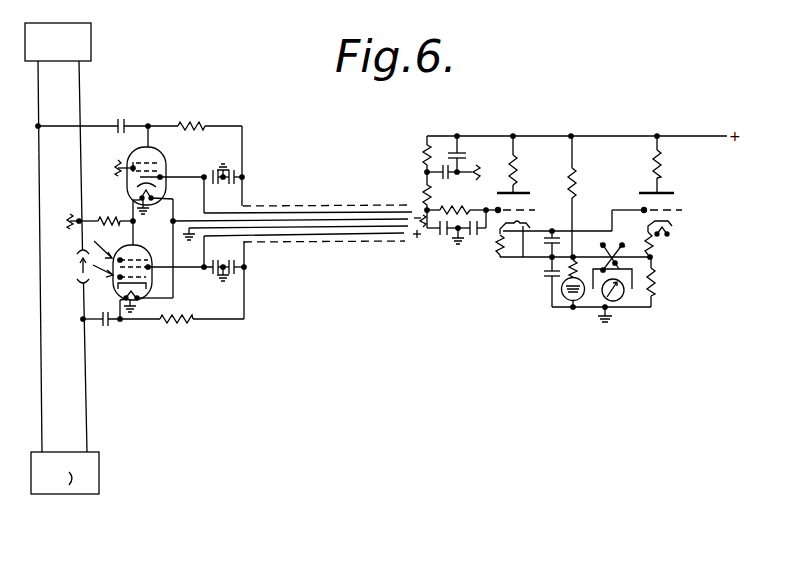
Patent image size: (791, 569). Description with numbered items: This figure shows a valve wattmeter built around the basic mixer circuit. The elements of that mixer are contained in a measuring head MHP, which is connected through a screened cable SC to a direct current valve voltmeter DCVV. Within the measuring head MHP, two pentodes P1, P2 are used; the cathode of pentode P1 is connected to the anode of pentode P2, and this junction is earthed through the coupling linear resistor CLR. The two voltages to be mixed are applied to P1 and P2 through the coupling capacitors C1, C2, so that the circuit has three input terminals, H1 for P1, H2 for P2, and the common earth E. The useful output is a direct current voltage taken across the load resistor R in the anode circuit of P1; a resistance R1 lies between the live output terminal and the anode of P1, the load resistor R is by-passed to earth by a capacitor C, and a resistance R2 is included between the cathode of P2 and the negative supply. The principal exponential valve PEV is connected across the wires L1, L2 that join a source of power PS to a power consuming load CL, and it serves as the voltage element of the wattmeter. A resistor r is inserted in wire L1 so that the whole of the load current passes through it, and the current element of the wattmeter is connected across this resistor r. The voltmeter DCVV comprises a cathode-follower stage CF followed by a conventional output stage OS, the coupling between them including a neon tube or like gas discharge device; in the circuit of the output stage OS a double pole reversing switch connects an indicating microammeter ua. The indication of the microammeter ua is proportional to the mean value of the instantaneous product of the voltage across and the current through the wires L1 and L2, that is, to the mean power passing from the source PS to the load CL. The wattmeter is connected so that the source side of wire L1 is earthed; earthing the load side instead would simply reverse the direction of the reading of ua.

The source of power PS is at (74, 40).
The wire L1 is at (94, 256).
The wire L2 is at (51, 256).
The power consuming load CL is at (69, 490).
The input terminal H1 is at (129, 129).
The input terminal H2 is at (152, 323).
The coupling capacitor C1 is at (124, 117).
The coupling capacitor C2 is at (106, 332).
The resistance R1 is at (194, 115).
The resistance R2 is at (176, 333).
The principal exponential valve PEV is at (128, 180).
The pentode P1 is at (173, 167).
The pentode P2 is at (179, 280).
The capacitor C is at (349, 207).
The coupling linear resistor CLR is at (105, 213).
The common earth terminal E is at (64, 224).
The resistor r is at (78, 257).
The measuring head MHP is at (192, 389).
The screened cable SC is at (299, 237).
The load resistor R is at (416, 182).
The cathode-follower stage CF is at (505, 251).
The output stage OS is at (662, 264).
The indicating microammeter ua is at (628, 308).
The direct current valve voltmeter DCVV is at (558, 358).